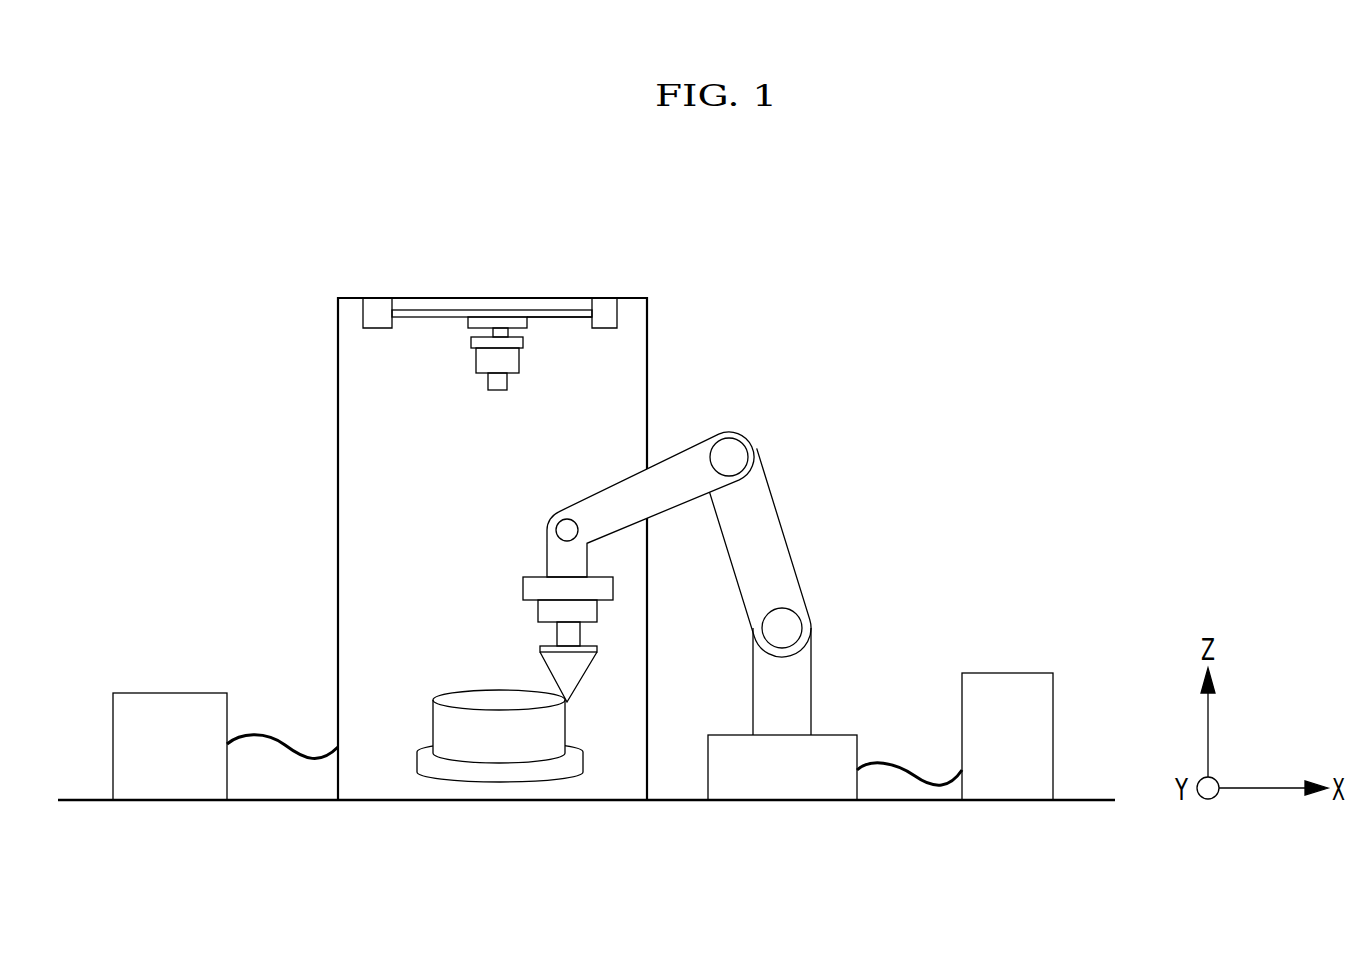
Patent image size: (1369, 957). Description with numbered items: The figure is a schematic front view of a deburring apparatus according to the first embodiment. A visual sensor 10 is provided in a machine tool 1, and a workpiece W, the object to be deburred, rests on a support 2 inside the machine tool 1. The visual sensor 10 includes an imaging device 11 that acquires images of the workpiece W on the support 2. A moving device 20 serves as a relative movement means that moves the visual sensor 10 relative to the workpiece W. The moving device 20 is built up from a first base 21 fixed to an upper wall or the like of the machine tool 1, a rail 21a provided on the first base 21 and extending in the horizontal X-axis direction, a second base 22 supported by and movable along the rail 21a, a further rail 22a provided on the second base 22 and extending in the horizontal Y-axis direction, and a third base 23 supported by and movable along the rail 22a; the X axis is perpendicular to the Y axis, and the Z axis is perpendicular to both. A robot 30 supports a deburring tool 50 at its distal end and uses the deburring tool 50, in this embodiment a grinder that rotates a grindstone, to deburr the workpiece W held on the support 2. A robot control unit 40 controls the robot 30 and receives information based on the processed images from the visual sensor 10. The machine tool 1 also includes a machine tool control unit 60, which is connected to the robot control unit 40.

The machine tool 1 is at (634, 285).
The support 2 is at (416, 762).
The visual sensor 10 is at (507, 418).
The imaging device 11 is at (475, 360).
The moving device 20 is at (408, 347).
The first base 21 is at (558, 296).
The rail 21a is at (578, 320).
The second base 22 is at (480, 317).
The rail 22a is at (492, 333).
The third base 23 is at (525, 342).
The robot 30 is at (812, 673).
The robot control unit 40 is at (1010, 672).
The deburring tool 50 is at (540, 660).
The machine tool control unit 60 is at (168, 690).
The workpiece W is at (433, 715).